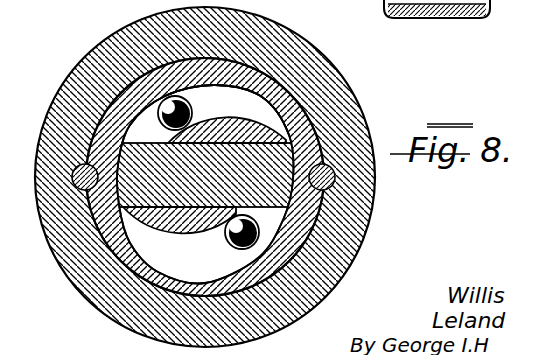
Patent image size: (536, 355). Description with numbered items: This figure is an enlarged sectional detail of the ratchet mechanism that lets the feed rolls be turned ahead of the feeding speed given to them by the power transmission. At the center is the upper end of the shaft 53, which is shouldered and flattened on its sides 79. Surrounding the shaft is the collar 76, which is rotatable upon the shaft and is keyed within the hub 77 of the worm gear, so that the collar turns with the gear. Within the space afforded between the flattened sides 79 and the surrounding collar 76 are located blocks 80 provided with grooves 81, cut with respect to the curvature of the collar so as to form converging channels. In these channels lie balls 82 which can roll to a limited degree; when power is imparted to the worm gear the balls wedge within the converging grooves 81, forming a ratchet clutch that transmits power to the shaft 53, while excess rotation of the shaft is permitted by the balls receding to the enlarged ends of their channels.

The shaft 53 is at (276, 167).
The collar 76 is at (293, 117).
The hub 77 is at (270, 43).
The flattened sides 79 is at (285, 222).
The blocks 80 is at (243, 125).
The grooves 81 is at (209, 110).
The balls 82 is at (163, 100).